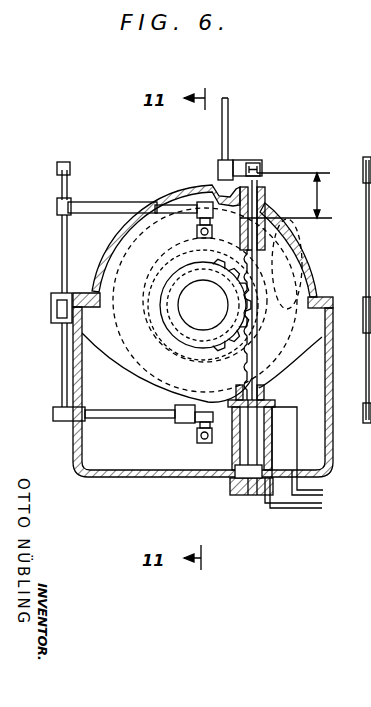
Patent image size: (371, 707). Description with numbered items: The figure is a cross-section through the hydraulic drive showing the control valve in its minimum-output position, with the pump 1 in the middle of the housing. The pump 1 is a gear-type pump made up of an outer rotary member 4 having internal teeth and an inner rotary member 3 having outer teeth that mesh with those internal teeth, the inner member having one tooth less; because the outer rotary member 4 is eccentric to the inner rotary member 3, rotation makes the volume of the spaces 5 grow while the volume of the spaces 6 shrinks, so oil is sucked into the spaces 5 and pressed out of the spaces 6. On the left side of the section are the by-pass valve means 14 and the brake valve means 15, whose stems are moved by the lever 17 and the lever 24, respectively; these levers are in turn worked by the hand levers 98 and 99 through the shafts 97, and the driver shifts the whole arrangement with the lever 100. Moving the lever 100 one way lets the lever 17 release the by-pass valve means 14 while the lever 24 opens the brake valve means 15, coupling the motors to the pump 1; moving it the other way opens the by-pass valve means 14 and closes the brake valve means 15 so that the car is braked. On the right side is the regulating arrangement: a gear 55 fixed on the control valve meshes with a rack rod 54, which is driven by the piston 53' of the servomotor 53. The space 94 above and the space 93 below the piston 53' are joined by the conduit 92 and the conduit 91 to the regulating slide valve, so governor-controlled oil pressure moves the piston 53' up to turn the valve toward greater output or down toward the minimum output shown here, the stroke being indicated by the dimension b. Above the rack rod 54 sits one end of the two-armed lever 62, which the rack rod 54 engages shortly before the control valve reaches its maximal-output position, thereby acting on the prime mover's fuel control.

The pump 1 is at (230, 292).
The inner rotary member 3 is at (95, 283).
The outer rotary member 4 is at (120, 207).
The spaces 5 is at (217, 185).
The spaces 6 is at (170, 230).
The by-pass valve means 14 is at (203, 226).
The brake valve means 15 is at (198, 440).
The lever 17 is at (197, 202).
The lever 24 is at (200, 428).
The servomotor 53 is at (227, 495).
The piston 53' is at (251, 514).
The rack rod 54 is at (275, 250).
The gear 55 is at (264, 357).
The two-armed lever 62 is at (258, 166).
The conduit 91 is at (315, 510).
The conduit 92 is at (330, 494).
The space 93 is at (255, 495).
The space 94 is at (265, 198).
The shaft 97 is at (165, 207).
The lever 98 is at (58, 352).
The lever 99 is at (60, 233).
The lever 100 is at (56, 165).
The distance b is at (286, 195).